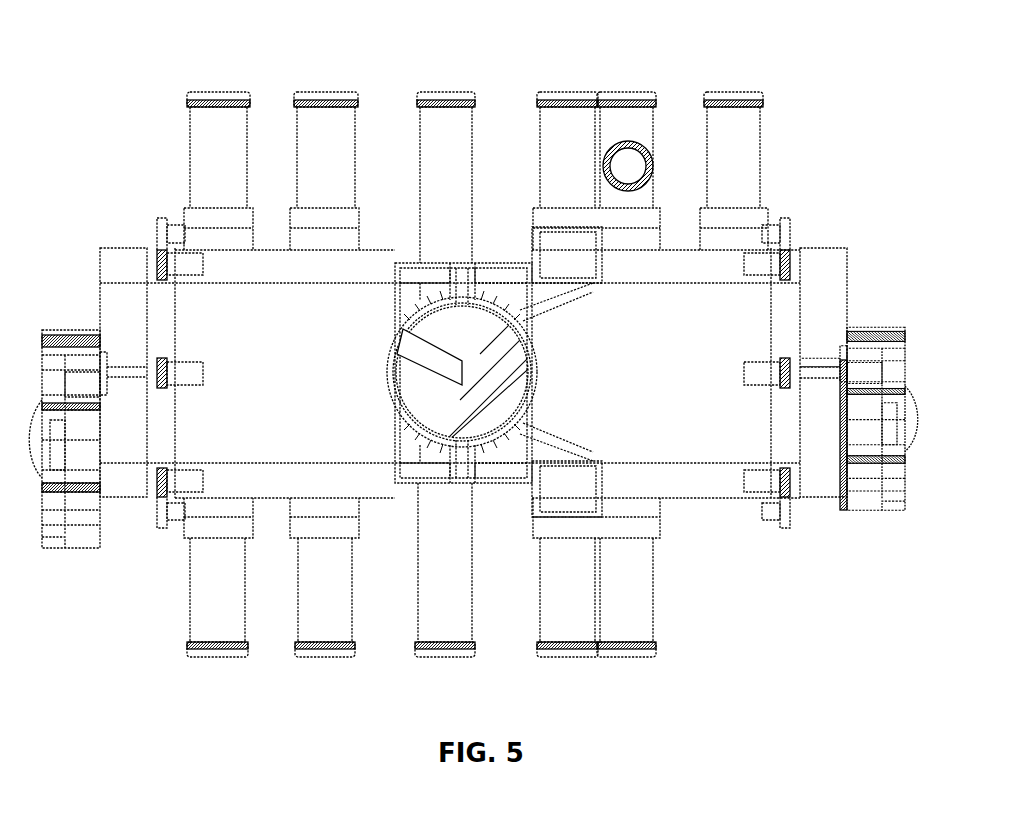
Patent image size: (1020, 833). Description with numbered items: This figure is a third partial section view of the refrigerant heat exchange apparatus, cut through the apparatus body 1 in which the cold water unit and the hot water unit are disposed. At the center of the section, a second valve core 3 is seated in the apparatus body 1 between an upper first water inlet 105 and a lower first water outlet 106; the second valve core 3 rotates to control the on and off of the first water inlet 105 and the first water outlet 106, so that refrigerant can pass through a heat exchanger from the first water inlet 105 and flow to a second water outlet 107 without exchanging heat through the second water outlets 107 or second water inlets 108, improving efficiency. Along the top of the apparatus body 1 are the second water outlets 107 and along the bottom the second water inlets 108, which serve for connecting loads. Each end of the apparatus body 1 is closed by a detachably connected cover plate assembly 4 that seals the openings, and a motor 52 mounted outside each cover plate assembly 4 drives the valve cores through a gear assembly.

The apparatus body 1 is at (700, 498).
The second valve core 3 is at (487, 432).
The cover plate assembly 4 is at (148, 247).
The motor 52 is at (90, 328).
The first water inlet 105 is at (452, 90).
The first water outlet 106 is at (413, 640).
The second water outlet 107 is at (220, 90).
The second water inlet 108 is at (198, 607).